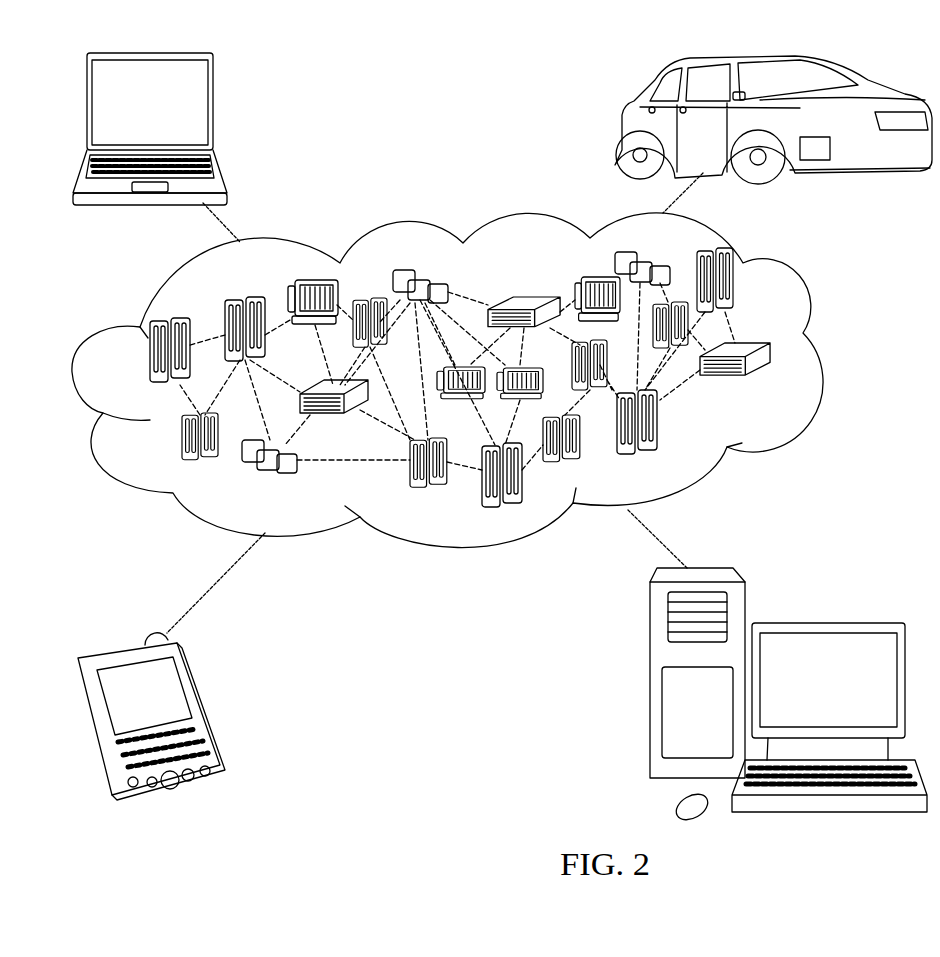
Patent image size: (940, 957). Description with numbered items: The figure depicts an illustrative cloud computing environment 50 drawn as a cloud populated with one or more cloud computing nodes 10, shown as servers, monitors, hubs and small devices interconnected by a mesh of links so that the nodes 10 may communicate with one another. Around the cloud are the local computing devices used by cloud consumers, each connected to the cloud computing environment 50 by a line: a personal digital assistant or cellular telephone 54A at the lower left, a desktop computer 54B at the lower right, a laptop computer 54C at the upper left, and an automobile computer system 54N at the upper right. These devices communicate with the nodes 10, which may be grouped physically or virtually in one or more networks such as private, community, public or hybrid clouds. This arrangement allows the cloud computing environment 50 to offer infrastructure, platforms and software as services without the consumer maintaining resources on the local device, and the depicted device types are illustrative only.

The cloud computing nodes 10 is at (773, 387).
The cloud computing environment 50 is at (830, 357).
The personal digital assistant or cellular telephone 54A is at (205, 707).
The desktop computer 54B is at (827, 620).
The laptop computer 54C is at (212, 112).
The automobile computer system 54N is at (620, 125).